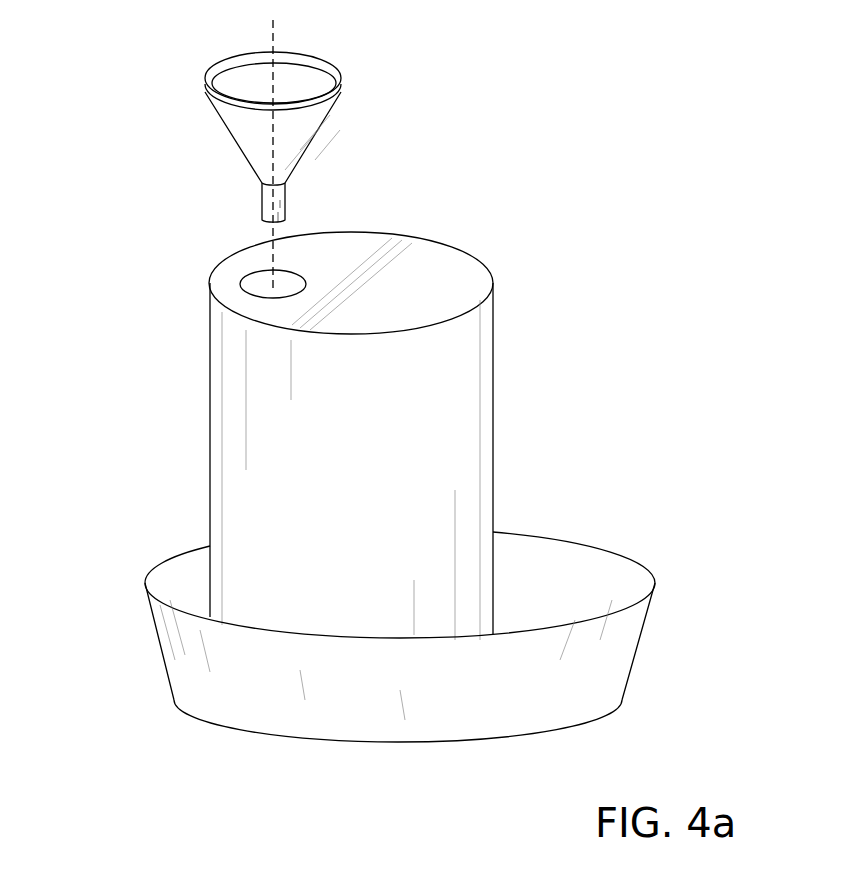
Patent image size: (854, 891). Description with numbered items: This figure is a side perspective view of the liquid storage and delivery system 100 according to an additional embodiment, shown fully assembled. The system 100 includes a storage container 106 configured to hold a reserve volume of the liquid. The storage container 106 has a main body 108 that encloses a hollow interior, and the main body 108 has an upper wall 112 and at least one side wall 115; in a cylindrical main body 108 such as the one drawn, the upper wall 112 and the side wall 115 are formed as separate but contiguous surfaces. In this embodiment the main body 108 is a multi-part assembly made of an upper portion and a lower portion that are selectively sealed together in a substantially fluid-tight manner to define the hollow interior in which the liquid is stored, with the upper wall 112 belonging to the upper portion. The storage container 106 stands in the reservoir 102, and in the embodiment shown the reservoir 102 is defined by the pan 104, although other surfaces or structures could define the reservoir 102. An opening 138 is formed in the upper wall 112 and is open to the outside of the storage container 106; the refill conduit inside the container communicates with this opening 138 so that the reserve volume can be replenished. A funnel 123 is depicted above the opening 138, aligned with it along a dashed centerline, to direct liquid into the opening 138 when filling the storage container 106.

The liquid storage and delivery system 100 is at (346, 429).
The reservoir 102 is at (346, 671).
The pan 104 is at (367, 705).
The storage container 106 is at (205, 320).
The main body 108 is at (345, 403).
The upper wall 112 is at (419, 282).
The side wall 115 is at (266, 400).
The funnel 123 is at (327, 135).
The opening 138 is at (255, 270).